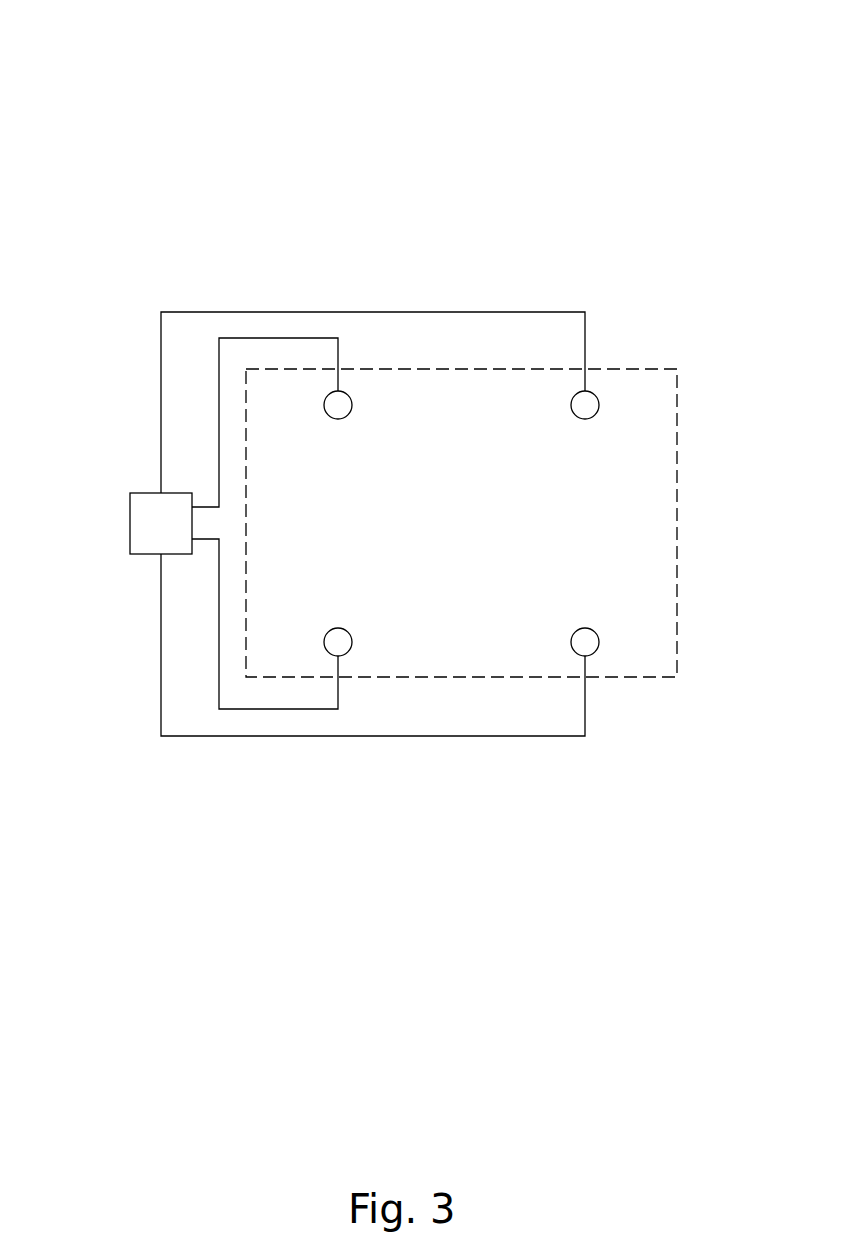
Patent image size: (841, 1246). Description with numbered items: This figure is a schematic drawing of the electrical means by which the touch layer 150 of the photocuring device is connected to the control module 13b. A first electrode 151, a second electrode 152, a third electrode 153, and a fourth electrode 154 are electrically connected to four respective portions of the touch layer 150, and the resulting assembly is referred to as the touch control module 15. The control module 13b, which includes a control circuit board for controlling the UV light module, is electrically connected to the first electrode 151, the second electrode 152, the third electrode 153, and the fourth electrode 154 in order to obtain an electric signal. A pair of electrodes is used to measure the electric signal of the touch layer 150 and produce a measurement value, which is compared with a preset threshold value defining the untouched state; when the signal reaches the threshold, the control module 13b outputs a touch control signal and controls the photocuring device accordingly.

The touch control module 15 is at (715, 43).
The control module 13b is at (130, 523).
The touch layer 150 is at (640, 369).
The first electrode 151 is at (348, 415).
The second electrode 152 is at (575, 415).
The third electrode 153 is at (575, 632).
The fourth electrode 154 is at (348, 632).